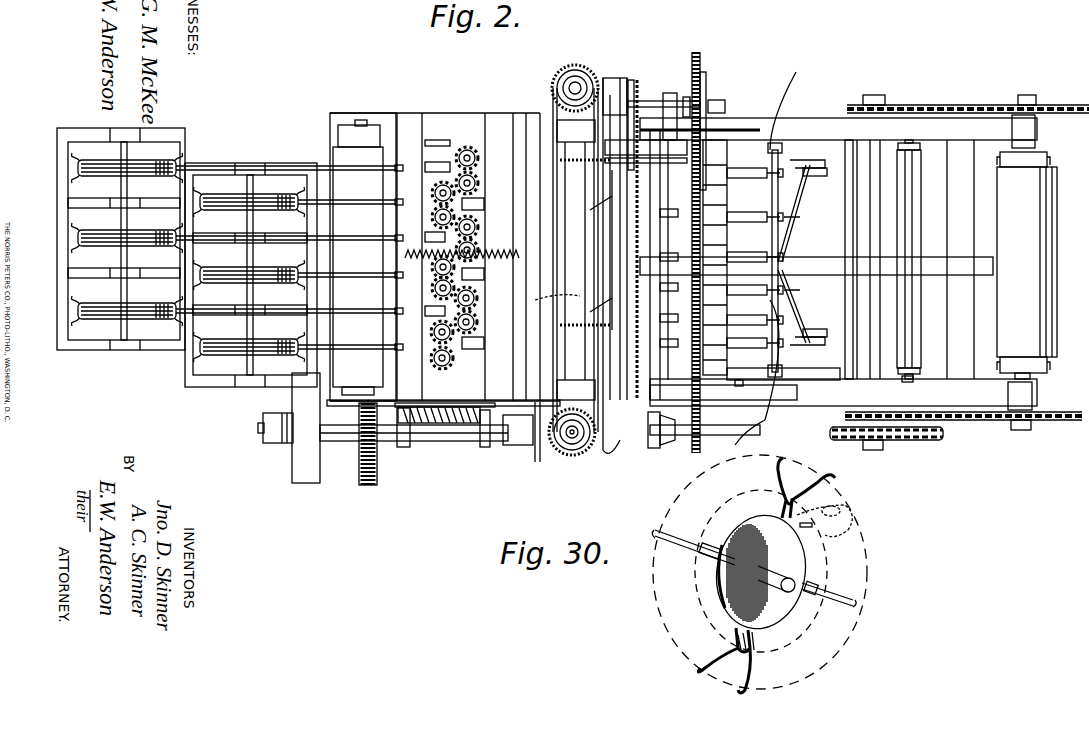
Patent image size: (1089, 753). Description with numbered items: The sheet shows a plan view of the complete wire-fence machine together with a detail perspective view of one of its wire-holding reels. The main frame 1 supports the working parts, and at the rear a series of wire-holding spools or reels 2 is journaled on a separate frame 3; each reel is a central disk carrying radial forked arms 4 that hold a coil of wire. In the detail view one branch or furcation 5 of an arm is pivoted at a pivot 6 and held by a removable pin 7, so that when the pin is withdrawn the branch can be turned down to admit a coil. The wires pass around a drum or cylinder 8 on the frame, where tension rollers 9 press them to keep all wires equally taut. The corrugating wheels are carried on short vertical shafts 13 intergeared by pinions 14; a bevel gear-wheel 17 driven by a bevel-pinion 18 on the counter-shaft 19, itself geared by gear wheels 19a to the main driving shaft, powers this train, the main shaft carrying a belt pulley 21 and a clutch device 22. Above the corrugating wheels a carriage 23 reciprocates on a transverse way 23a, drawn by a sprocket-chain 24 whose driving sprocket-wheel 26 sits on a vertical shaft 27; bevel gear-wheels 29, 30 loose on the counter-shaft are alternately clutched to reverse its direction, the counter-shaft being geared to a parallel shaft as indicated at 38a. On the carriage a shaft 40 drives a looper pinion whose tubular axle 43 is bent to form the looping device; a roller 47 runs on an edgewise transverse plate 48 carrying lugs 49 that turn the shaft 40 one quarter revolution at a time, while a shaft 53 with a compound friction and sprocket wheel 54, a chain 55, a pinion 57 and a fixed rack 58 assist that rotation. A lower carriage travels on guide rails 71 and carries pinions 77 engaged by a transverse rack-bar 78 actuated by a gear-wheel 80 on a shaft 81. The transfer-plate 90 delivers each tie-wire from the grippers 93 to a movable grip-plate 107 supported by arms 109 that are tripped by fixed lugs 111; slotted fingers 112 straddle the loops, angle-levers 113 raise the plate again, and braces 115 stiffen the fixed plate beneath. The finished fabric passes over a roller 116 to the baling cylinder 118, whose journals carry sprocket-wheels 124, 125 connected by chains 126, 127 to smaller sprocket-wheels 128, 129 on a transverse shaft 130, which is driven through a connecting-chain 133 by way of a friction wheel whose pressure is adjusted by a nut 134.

In FIG. 2, the main frame 1 is at (838, 262).
In FIG. 2, the wire-holding spools or reels 2 is at (120, 330).
In FIG. 30, the wire-holding spools or reels 2 is at (761, 572).
In FIG. 2, the separate and independent frame 3 is at (167, 348).
In FIG. 2, the radial forked arms 4 is at (178, 168).
In FIG. 30, the radial forked arms 4 is at (777, 466).
In FIG. 30, the branch or furcation 5 is at (693, 540).
In FIG. 30, the pivot 6 is at (782, 502).
In FIG. 30, the removable pin 7 is at (824, 526).
In FIG. 2, the drum or cylinder 8 is at (363, 257).
In FIG. 2, the tension wheels or rollers 9 is at (392, 166).
In FIG. 2, the short vertical shafts 13 is at (467, 146).
In FIG. 2, the small toothed wheels or pinions 14 is at (432, 192).
In FIG. 2, the bevel gear-wheel 17 is at (452, 423).
In FIG. 2, the bevel-pinion 18 is at (403, 448).
In FIG. 2, the counter-shaft 19 is at (478, 441).
In FIG. 2, the gear wheels 19a is at (362, 460).
In FIG. 2, the belt wheel or pulley 21 is at (426, 428).
In FIG. 2, the clutch device 22 is at (265, 440).
In FIG. 2, the carriage 23 is at (576, 250).
In FIG. 2, the transverse way or guide 23a is at (560, 343).
In FIG. 2, the sprocket-chain 24 is at (565, 70).
In FIG. 2, the driving sprocket-wheel 26 is at (560, 455).
In FIG. 2, the vertical shaft 27 is at (574, 440).
In FIG. 2, the bevel gear-wheel 29 is at (530, 445).
In FIG. 2, the bevel gear-wheel 30 is at (605, 450).
In FIG. 2, the gearing 38a is at (680, 440).
In FIG. 2, the shaft 40 is at (666, 257).
In FIG. 2, the tubular shaft or axle 43 is at (671, 202).
In FIG. 2, the roller 47 is at (606, 176).
In FIG. 2, the edgewise-disposed transverse plate 48 is at (620, 90).
In FIG. 2, the horizontal lugs or blocks 49 is at (612, 250).
In FIG. 2, the shaft 53 is at (672, 93).
In FIG. 2, the compound friction and sprocket wheel 54 is at (708, 80).
In FIG. 2, the chain 55 is at (712, 130).
In FIG. 2, the pinion 57 is at (656, 100).
In FIG. 2, the transverse rack 58 is at (640, 80).
In FIG. 2, the lateral guide rails or ways 71 is at (780, 150).
In FIG. 2, the pinion 77 is at (700, 188).
In FIG. 2, the transversely-reciprocating rack-bar 78 is at (703, 62).
In FIG. 2, the gear-wheel 80 is at (700, 452).
In FIG. 2, the shaft 81 is at (742, 222).
In FIG. 2, the transfer-plate 90 is at (671, 305).
In FIG. 2, the grippers 93 is at (671, 260).
In FIG. 2, the movable grip-plate 107 is at (790, 266).
In FIG. 2, the arms 109 is at (771, 258).
In FIG. 2, the fixed blocks or lugs 111 is at (745, 385).
In FIG. 2, the slotted fingers 112 is at (788, 218).
In FIG. 2, the angle-levers 113 is at (796, 172).
In FIG. 2, the braces 115 is at (790, 240).
In FIG. 2, the roller 116 is at (908, 220).
In FIG. 2, the baling roll or cylinder 118 is at (1027, 265).
In FIG. 2, the sprocket-wheel 124 is at (1046, 90).
In FIG. 2, the sprocket-wheel 125 is at (1022, 430).
In FIG. 2, the sprocket-chain 126 is at (990, 105).
In FIG. 2, the sprocket-chain 127 is at (972, 421).
In FIG. 2, the smaller sprocket-wheel 128 is at (880, 95).
In FIG. 2, the smaller sprocket-wheel 129 is at (880, 412).
In FIG. 2, the transverse shaft 130 is at (876, 150).
In FIG. 2, the connecting-chain 133 is at (886, 443).
In FIG. 2, the nut 134 is at (878, 450).